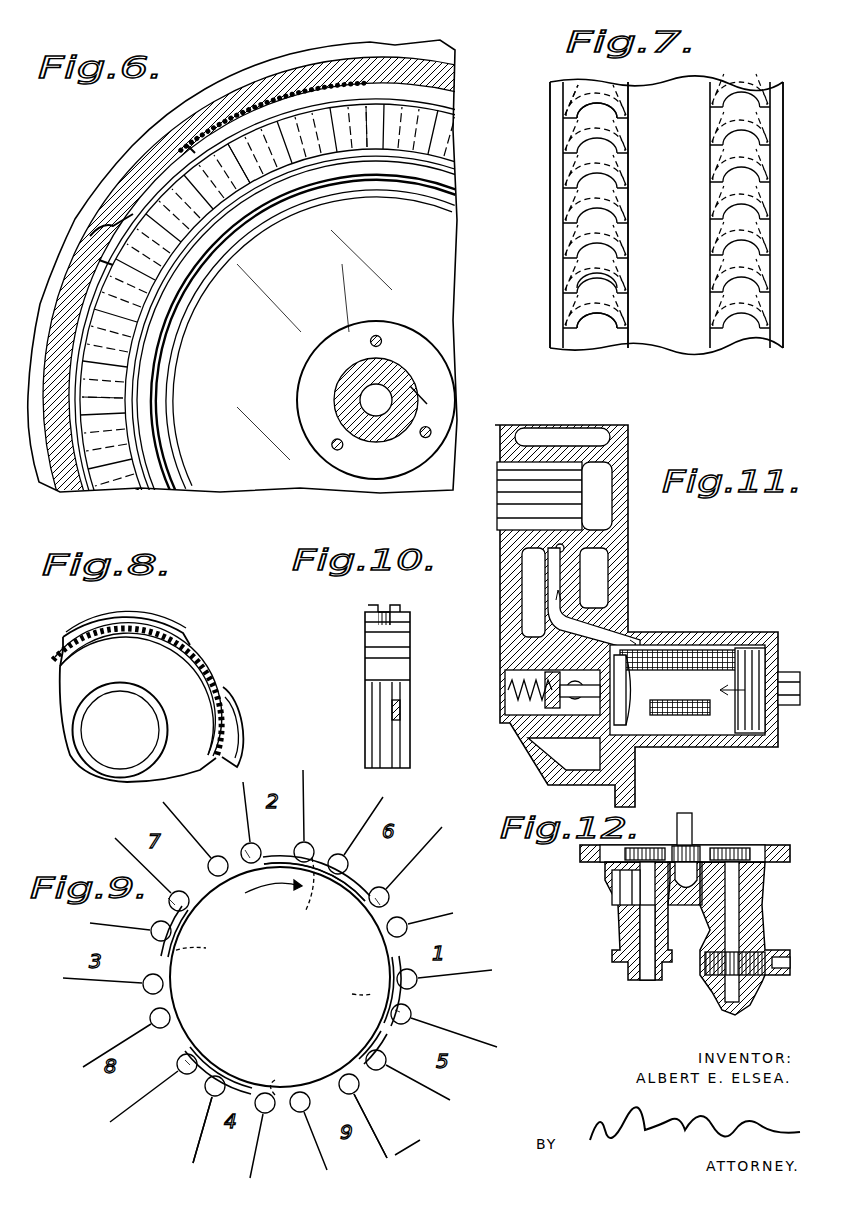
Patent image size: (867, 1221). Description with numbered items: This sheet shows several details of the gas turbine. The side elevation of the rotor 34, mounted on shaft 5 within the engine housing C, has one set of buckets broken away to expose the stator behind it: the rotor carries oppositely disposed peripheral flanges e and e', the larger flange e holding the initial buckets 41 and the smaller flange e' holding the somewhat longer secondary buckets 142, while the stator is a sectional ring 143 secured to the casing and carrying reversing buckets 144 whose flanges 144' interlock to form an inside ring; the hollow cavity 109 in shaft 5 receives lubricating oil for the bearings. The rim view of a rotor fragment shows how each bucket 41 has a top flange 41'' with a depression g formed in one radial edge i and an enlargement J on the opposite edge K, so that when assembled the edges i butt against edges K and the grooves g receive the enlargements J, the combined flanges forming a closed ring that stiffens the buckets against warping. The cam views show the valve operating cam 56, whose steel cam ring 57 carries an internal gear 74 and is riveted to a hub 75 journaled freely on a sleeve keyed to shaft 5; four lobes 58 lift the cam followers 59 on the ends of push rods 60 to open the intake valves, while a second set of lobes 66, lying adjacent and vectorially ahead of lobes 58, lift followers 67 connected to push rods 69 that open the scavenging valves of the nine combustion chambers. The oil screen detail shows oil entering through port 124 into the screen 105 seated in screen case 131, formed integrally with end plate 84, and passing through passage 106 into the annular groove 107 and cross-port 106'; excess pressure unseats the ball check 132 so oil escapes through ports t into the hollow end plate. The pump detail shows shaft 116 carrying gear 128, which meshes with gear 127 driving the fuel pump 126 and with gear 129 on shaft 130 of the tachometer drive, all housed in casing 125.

In FIG. 6, the buckets 41 is at (284, 314).
In FIG. 7, the buckets 41 is at (568, 206).
In FIG. 6, the buckets 142 is at (354, 164).
In FIG. 7, the buckets 142 is at (735, 88).
In FIG. 6, the sectional ring 143 is at (93, 241).
In FIG. 6, the engine housing C is at (60, 254).
In FIG. 11, the engine housing C is at (598, 428).
In FIG. 6, the flanges 144' is at (299, 329).
In FIG. 6, the stator buckets 144 is at (301, 331).
In FIG. 6, the rotor 34 is at (438, 272).
In FIG. 6, the peripheral flange e is at (305, 335).
In FIG. 7, the peripheral flange e is at (526, 215).
In FIG. 6, the cavity 109 is at (377, 401).
In FIG. 6, the shaft 5 is at (422, 394).
In FIG. 7, the top flange 41'' is at (561, 295).
In FIG. 7, the edge K is at (628, 123).
In FIG. 7, the enlargement J is at (590, 108).
In FIG. 7, the radial edge i is at (570, 230).
In FIG. 7, the peripheral flange e' is at (792, 215).
In FIG. 7, the depression g is at (595, 328).
In FIG. 11, the annular groove 107 is at (548, 445).
In FIG. 11, the end plate 84 is at (628, 432).
In FIG. 11, the cross-port 106' is at (496, 592).
In FIG. 11, the passage 106 is at (616, 598).
In FIG. 11, the screen 105 is at (672, 650).
In FIG. 11, the screen case 131 is at (705, 632).
In FIG. 11, the ball check 132 is at (505, 695).
In FIG. 11, the ports t is at (525, 785).
In FIG. 11, the port 124 is at (748, 700).
In FIG. 8, the lobes 58 is at (120, 618).
In FIG. 9, the lobes 58 is at (274, 976).
In FIG. 8, the lobes 66 is at (180, 627).
In FIG. 10, the lobes 66 is at (370, 612).
In FIG. 9, the lobes 66 is at (190, 920).
In FIG. 8, the valve operating cam 56 is at (170, 643).
In FIG. 10, the valve operating cam 56 is at (372, 660).
In FIG. 9, the valve operating cam 56 is at (365, 880).
In FIG. 8, the internal gear 74 is at (193, 660).
In FIG. 8, the cam ring 57 is at (213, 680).
In FIG. 10, the cam ring 57 is at (405, 672).
In FIG. 9, the cam ring 57 is at (375, 920).
In FIG. 8, the hub 75 is at (72, 733).
In FIG. 9, the push rods 60 is at (178, 818).
In FIG. 9, the cam followers 59 is at (308, 840).
In FIG. 9, the cam followers 67 is at (258, 850).
In FIG. 9, the push rod 69 is at (140, 1100).
In FIG. 12, the gear 128 is at (672, 835).
In FIG. 12, the shaft 116 is at (695, 835).
In FIG. 12, the gear 127 is at (745, 845).
In FIG. 12, the gear 129 is at (605, 870).
In FIG. 12, the casing 125 is at (607, 888).
In FIG. 12, the shaft 130 is at (640, 918).
In FIG. 12, the fuel pump 126 is at (760, 940).